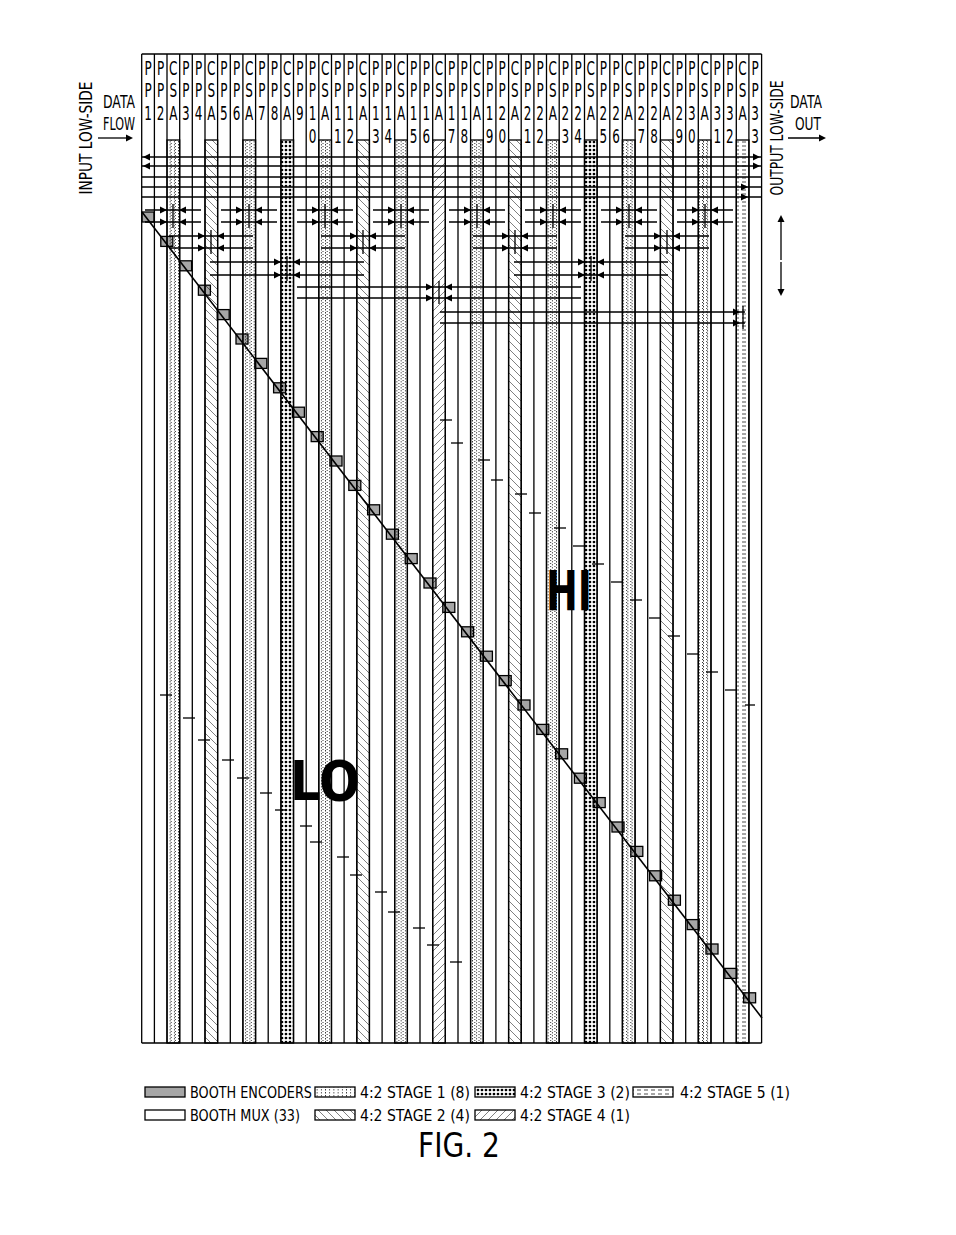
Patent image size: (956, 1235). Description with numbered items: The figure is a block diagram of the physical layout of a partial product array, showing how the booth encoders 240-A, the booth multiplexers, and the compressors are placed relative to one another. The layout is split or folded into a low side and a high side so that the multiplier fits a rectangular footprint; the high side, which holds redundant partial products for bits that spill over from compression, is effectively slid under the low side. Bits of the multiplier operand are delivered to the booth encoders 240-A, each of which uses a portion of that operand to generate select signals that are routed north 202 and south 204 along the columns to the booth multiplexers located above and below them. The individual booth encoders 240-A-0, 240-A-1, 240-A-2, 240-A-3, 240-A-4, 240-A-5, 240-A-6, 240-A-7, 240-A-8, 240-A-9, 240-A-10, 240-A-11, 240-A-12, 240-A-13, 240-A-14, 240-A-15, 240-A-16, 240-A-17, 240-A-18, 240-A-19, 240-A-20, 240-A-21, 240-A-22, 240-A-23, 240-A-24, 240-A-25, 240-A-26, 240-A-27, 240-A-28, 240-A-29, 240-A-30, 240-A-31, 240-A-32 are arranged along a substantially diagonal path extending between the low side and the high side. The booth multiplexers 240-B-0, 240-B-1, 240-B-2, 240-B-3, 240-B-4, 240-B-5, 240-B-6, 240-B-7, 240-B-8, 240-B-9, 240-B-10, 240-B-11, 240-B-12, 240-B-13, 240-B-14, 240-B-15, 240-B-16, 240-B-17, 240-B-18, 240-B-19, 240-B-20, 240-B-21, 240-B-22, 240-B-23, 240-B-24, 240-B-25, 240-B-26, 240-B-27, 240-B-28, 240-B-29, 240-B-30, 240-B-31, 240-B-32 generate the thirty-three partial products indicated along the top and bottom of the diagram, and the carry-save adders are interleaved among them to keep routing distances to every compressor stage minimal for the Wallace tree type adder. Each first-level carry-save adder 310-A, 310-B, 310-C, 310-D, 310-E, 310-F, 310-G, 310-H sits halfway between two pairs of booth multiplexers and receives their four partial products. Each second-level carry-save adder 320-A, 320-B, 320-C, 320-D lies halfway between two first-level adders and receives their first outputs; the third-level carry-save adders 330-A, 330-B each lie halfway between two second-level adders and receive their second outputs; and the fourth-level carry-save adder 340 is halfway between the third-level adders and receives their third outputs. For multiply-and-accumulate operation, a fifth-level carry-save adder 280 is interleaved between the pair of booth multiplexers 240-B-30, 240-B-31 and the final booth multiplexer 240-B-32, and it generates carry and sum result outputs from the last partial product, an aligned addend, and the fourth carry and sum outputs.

The north routing direction 202 is at (788, 243).
The south routing direction 204 is at (788, 280).
The booth encoders 240-A is at (488, 655).
The booth encoder 240-A-0 is at (148, 220).
The booth encoder 240-A-1 is at (161, 241).
The booth encoder 240-A-2 is at (180, 266).
The booth encoder 240-A-3 is at (198, 290).
The booth encoder 240-A-4 is at (217, 315).
The booth encoder 240-A-5 is at (236, 339).
The booth encoder 240-A-6 is at (255, 363).
The booth encoder 240-A-7 is at (274, 388).
The booth encoder 240-A-8 is at (292, 412).
The booth encoder 240-A-9 is at (311, 437).
The booth encoder 240-A-10 is at (330, 461).
The booth encoder 240-A-11 is at (349, 485).
The booth encoder 240-A-12 is at (368, 510).
The booth encoder 240-A-13 is at (386, 534).
The booth encoder 240-A-14 is at (405, 559).
The booth encoder 240-A-15 is at (424, 583).
The booth encoder 240-A-16 is at (443, 607).
The booth encoder 240-A-17 is at (462, 632).
The booth encoder 240-A-18 is at (481, 657).
The booth encoder 240-A-19 is at (499, 681).
The booth encoder 240-A-20 is at (530, 705).
The booth encoder 240-A-21 is at (549, 729).
The booth encoder 240-A-22 is at (568, 754).
The booth encoder 240-A-23 is at (586, 778).
The booth encoder 240-A-24 is at (605, 803).
The booth encoder 240-A-25 is at (624, 827).
The booth encoder 240-A-26 is at (643, 851).
The booth encoder 240-A-27 is at (662, 876).
The booth encoder 240-A-28 is at (680, 900).
The booth encoder 240-A-29 is at (699, 925).
The booth encoder 240-A-30 is at (718, 949).
The booth encoder 240-A-31 is at (737, 973).
The booth encoder 240-A-32 is at (756, 998).
The booth multiplexer 240-B-0 is at (160, 695).
The booth multiplexer 240-B-1 is at (183, 718).
The booth multiplexer 240-B-2 is at (198, 740).
The booth multiplexer 240-B-3 is at (222, 760).
The booth multiplexer 240-B-4 is at (237, 778).
The booth multiplexer 240-B-5 is at (260, 793).
The booth multiplexer 240-B-6 is at (275, 810).
The booth multiplexer 240-B-7 is at (300, 826).
The booth multiplexer 240-B-8 is at (310, 842).
The booth multiplexer 240-B-9 is at (337, 857).
The booth multiplexer 240-B-10 is at (350, 875).
The booth multiplexer 240-B-11 is at (375, 892).
The booth multiplexer 240-B-12 is at (388, 912).
The booth multiplexer 240-B-13 is at (413, 928).
The booth multiplexer 240-B-14 is at (427, 945).
The booth multiplexer 240-B-15 is at (450, 962).
The booth multiplexer 240-B-16 is at (452, 420).
The booth multiplexer 240-B-17 is at (463, 443).
The booth multiplexer 240-B-18 is at (490, 460).
The booth multiplexer 240-B-19 is at (503, 480).
The booth multiplexer 240-B-20 is at (527, 494).
The booth multiplexer 240-B-21 is at (541, 513).
The booth multiplexer 240-B-22 is at (566, 528).
The booth multiplexer 240-B-23 is at (585, 546).
The booth multiplexer 240-B-24 is at (604, 564).
The booth multiplexer 240-B-25 is at (623, 582).
The booth multiplexer 240-B-26 is at (642, 600).
The booth multiplexer 240-B-27 is at (661, 618).
The booth multiplexer 240-B-28 is at (680, 636).
The booth multiplexer 240-B-29 is at (699, 654).
The booth multiplexer 240-B-30 is at (718, 672).
The booth multiplexer 240-B-31 is at (737, 690).
The final booth multiplexer 240-B-32 is at (752, 705).
The carry-save adder 310-A is at (173, 54).
The carry-save adder 310-B is at (249, 54).
The carry-save adder 310-C is at (325, 54).
The carry-save adder 310-D is at (401, 54).
The carry-save adder 310-E is at (477, 54).
The carry-save adder 310-F is at (553, 54).
The carry-save adder 310-G is at (629, 54).
The carry-save adder 310-H is at (705, 54).
The carry-save adder 320-A is at (211, 1044).
The carry-save adder 320-B is at (363, 1044).
The carry-save adder 320-C is at (515, 1044).
The carry-save adder 320-D is at (667, 1044).
The carry-save adder 330-A is at (287, 1044).
The carry-save adder 330-B is at (591, 1044).
The carry-save adder 340 is at (439, 1044).
The carry-save adder 280 is at (743, 1044).